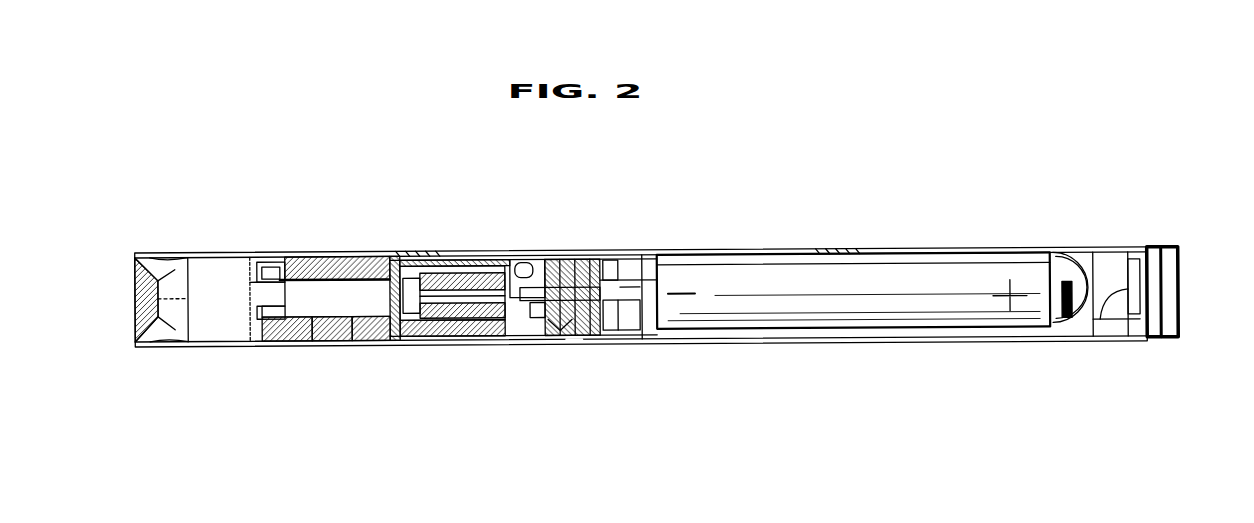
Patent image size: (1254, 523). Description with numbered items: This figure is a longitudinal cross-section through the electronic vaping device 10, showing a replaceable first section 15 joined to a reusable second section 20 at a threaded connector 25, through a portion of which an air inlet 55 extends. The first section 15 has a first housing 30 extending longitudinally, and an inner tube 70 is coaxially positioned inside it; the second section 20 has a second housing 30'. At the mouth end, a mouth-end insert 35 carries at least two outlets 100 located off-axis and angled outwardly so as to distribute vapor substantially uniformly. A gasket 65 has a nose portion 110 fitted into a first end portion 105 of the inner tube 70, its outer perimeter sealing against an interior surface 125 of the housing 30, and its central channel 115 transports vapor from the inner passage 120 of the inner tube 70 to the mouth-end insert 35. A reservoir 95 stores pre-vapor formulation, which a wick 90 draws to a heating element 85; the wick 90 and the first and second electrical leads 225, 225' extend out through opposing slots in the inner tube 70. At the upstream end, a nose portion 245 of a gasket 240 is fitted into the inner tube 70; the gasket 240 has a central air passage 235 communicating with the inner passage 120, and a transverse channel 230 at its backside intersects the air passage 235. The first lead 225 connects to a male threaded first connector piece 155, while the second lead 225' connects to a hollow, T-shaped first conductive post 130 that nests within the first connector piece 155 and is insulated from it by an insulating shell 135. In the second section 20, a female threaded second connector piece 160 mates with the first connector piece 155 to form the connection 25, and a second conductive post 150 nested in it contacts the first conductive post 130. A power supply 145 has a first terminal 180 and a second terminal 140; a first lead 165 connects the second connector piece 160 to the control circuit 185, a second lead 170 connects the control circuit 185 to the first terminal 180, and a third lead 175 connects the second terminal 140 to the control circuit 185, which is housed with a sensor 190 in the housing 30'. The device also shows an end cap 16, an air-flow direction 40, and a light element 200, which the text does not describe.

The electronic vaping device 10 is at (737, 165).
The first section 15 is at (462, 240).
The end cap 16 is at (1162, 335).
The second section 20 is at (908, 245).
The threaded connector 25 is at (584, 358).
The first housing 30 is at (418, 229).
The second housing 30' is at (841, 227).
The mouth-end insert 35 is at (140, 296).
The air flow direction 40 is at (1183, 305).
The air inlet 55 is at (560, 255).
The gasket 65 is at (258, 328).
The inner tube 70 is at (342, 312).
The heating element 85 is at (386, 288).
The wick 90 is at (388, 270).
The reservoir 95 is at (306, 265).
The outlets 100 is at (152, 252).
The first end portion 105 is at (265, 262).
The nose portion 110 is at (281, 283).
The central channel 115 is at (258, 302).
The inner passage 120 is at (331, 303).
The interior surface 125 is at (308, 305).
The first conductive post 130 is at (542, 305).
The insulating shell 135 is at (560, 323).
The second terminal 140 is at (645, 318).
The power supply 145 is at (1012, 265).
The second conductive post 150 is at (650, 255).
The first connector piece 155 is at (602, 262).
The second connector piece 160 is at (625, 277).
The first lead 165 is at (665, 252).
The second lead 170 is at (1068, 333).
The third lead 175 is at (820, 342).
The first terminal 180 is at (1040, 332).
The control circuit 185 is at (1086, 270).
The sensor 190 is at (1110, 265).
The LED 200 is at (1103, 312).
The first electrical lead 225 is at (480, 229).
The second electrical lead 225' is at (462, 358).
The transverse channel 230 is at (520, 255).
The air passage 235 is at (468, 300).
The gasket 240 is at (493, 253).
The nose portion 245 is at (448, 254).